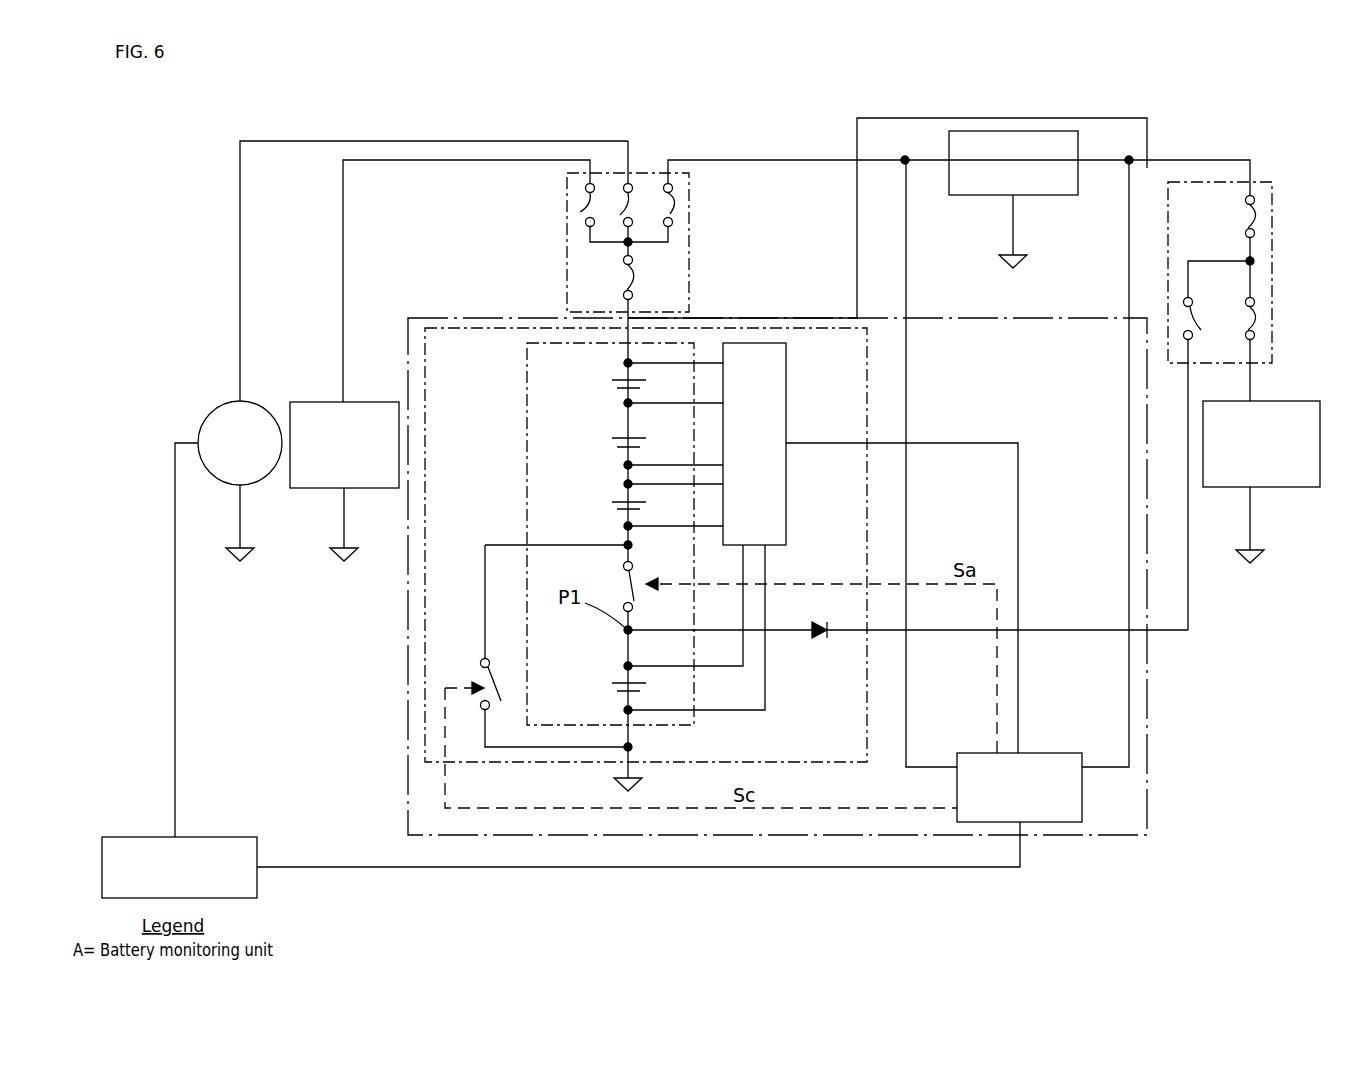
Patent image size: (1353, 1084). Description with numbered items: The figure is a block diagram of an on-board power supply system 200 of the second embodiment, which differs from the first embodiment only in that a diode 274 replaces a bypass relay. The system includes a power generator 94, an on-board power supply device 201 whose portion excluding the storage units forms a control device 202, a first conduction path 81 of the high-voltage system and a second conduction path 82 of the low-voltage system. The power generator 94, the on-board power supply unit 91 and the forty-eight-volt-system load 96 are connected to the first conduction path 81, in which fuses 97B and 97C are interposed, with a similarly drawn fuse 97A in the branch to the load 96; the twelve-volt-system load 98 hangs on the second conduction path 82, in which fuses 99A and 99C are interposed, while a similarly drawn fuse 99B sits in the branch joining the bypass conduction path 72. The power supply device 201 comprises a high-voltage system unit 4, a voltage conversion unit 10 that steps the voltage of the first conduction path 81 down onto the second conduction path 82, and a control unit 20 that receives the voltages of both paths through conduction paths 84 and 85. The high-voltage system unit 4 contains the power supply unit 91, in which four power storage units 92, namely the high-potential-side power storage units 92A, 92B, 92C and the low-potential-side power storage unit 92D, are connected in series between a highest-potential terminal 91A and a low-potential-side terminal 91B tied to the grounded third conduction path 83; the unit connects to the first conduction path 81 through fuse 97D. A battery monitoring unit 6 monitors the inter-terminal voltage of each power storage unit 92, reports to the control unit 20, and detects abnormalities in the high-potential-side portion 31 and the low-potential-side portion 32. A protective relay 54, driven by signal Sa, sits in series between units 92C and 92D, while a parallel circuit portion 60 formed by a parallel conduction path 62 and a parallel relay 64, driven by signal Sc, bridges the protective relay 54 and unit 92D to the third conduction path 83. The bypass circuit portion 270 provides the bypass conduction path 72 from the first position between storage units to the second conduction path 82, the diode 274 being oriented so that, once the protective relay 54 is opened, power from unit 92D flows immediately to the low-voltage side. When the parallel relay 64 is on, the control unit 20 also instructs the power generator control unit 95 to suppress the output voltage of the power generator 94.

The on-board power supply system 200 is at (1208, 122).
The voltage conversion unit 10 is at (1015, 131).
The first conduction path 81 is at (790, 152).
The second conduction path 82 is at (1240, 160).
The conduction path 84 is at (907, 372).
The conduction path 85 is at (1128, 372).
The switch 97A is at (580, 212).
The fuse 97B is at (620, 215).
The fuse 97C is at (676, 198).
The fuse 97D is at (636, 272).
The power generator 94 is at (222, 405).
The load of the high-voltage system 96 is at (320, 402).
The power generator control unit 95 is at (160, 836).
The on-board power supply unit 91 is at (527, 402).
The terminal 91A is at (627, 378).
The low-potential-side terminal 91B is at (646, 691).
The power storage unit 92 is at (621, 535).
The high-potential-side power storage unit 92A is at (612, 388).
The high-potential-side power storage unit 92B is at (612, 447).
The high-potential-side power storage unit 92C is at (612, 509).
The low-potential-side power storage unit 92D is at (612, 691).
The high-potential-side portion 31 is at (648, 447).
The low-potential-side portion 32 is at (606, 674).
The battery monitoring unit 6 is at (786, 383).
The protective relay 54 is at (633, 585).
The parallel circuit portion 60 is at (472, 646).
The parallel conduction path 62 is at (485, 630).
The parallel relay 64 is at (476, 682).
The third conduction path 83 is at (640, 778).
The bypass circuit portion 270 is at (908, 570).
The bypass conduction path 72 is at (773, 630).
The diode 274 is at (818, 624).
The high-voltage system unit 4 is at (775, 762).
The control unit 20 is at (1082, 805).
The control device for an on-board power supply unit 202 is at (861, 576).
The on-board power supply device 201 is at (1147, 735).
The fuse 99A is at (1256, 210).
The switch 99B is at (1217, 445).
The fuse 99C is at (1246, 314).
The load of the low-voltage system 98 is at (1268, 401).